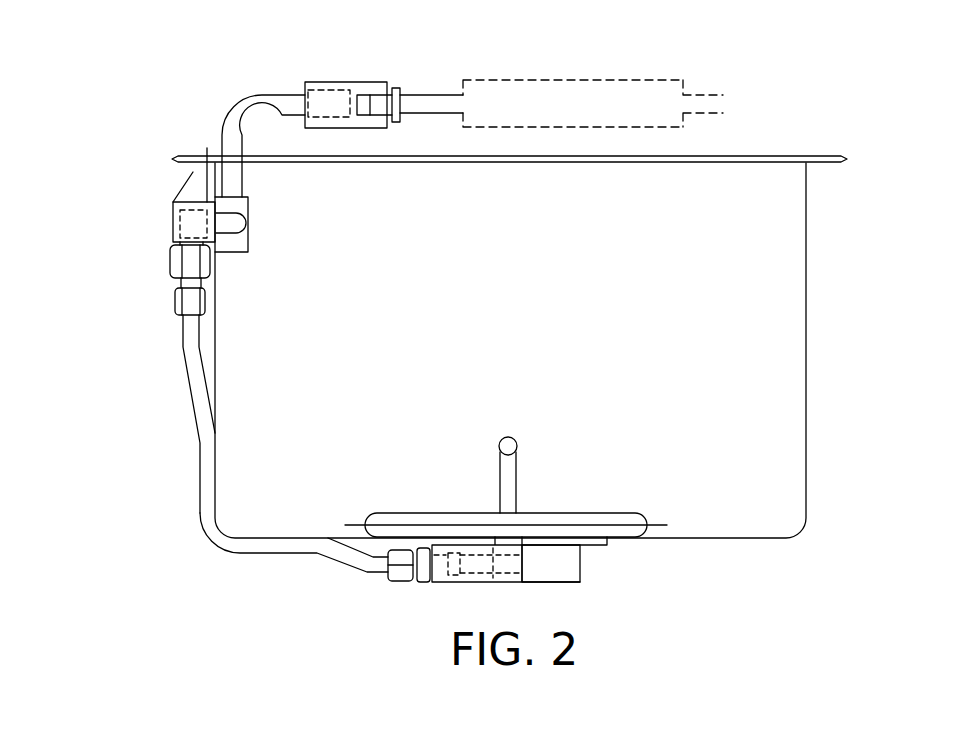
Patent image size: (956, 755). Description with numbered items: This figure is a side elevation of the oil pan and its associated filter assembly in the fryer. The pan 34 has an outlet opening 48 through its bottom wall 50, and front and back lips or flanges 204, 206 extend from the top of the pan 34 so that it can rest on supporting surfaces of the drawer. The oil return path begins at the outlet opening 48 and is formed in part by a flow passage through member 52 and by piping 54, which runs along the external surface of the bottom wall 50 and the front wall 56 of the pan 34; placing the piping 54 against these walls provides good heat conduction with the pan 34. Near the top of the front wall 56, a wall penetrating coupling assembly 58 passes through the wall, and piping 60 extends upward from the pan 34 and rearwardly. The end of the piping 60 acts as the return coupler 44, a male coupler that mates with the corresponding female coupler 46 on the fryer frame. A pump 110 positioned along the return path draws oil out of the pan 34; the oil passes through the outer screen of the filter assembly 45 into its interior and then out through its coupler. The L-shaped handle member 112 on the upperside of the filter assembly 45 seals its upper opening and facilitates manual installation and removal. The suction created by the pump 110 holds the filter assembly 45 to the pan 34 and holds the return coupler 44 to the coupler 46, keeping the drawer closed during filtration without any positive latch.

The pan 34 is at (774, 108).
The back lip or flange 206 is at (830, 163).
The front lip or flange 204 is at (183, 155).
The piping 60 is at (234, 107).
The return coupler 44 is at (305, 93).
The corresponding coupler 46 is at (360, 82).
The pump 110 is at (603, 80).
The wall penetrating coupling assembly 58 is at (134, 226).
The front wall 56 is at (215, 365).
The piping 54 is at (200, 505).
The filter assembly 45 is at (360, 495).
The outlet opening 48 is at (522, 545).
The member 52 is at (582, 568).
The bottom wall 50 is at (593, 537).
The L-shaped handle member 112 is at (517, 458).